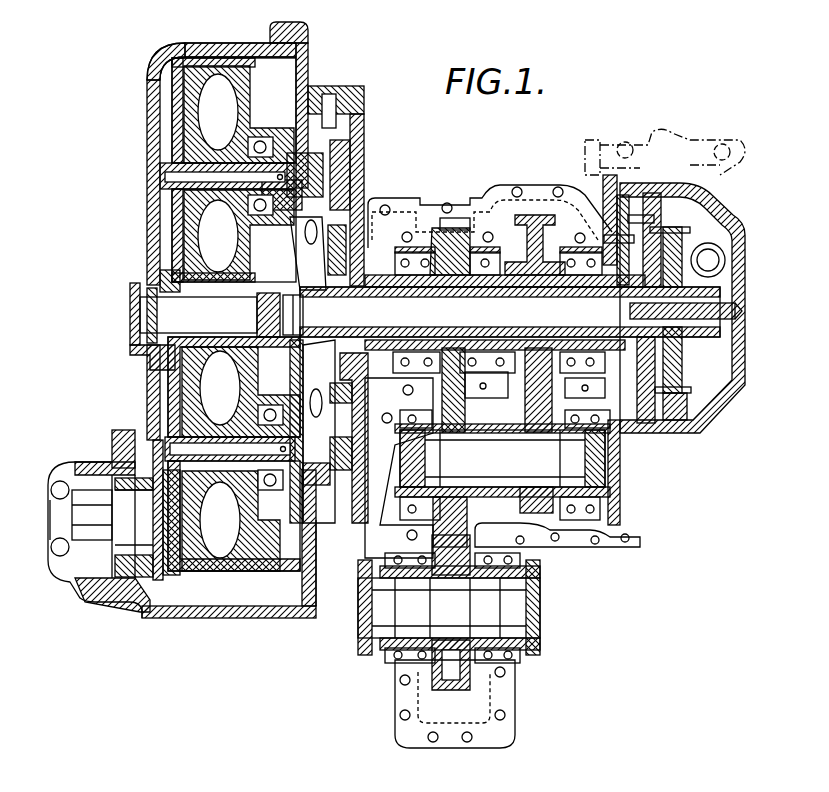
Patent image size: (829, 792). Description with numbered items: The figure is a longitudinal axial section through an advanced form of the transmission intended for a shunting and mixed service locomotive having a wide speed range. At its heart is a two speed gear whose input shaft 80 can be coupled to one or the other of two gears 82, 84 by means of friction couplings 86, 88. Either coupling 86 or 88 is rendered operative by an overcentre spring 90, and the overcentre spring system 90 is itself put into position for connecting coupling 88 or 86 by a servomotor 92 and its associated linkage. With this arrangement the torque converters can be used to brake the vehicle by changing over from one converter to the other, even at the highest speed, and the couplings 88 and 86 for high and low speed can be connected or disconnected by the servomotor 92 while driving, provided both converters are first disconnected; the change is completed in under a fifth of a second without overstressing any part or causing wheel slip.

The input shaft 80 is at (462, 325).
The gear 82 is at (450, 248).
The gear 84 is at (533, 228).
The friction coupling 86 is at (645, 217).
The friction coupling 88 is at (620, 214).
The overcentre spring 90 is at (678, 248).
The servomotor 92 is at (643, 134).